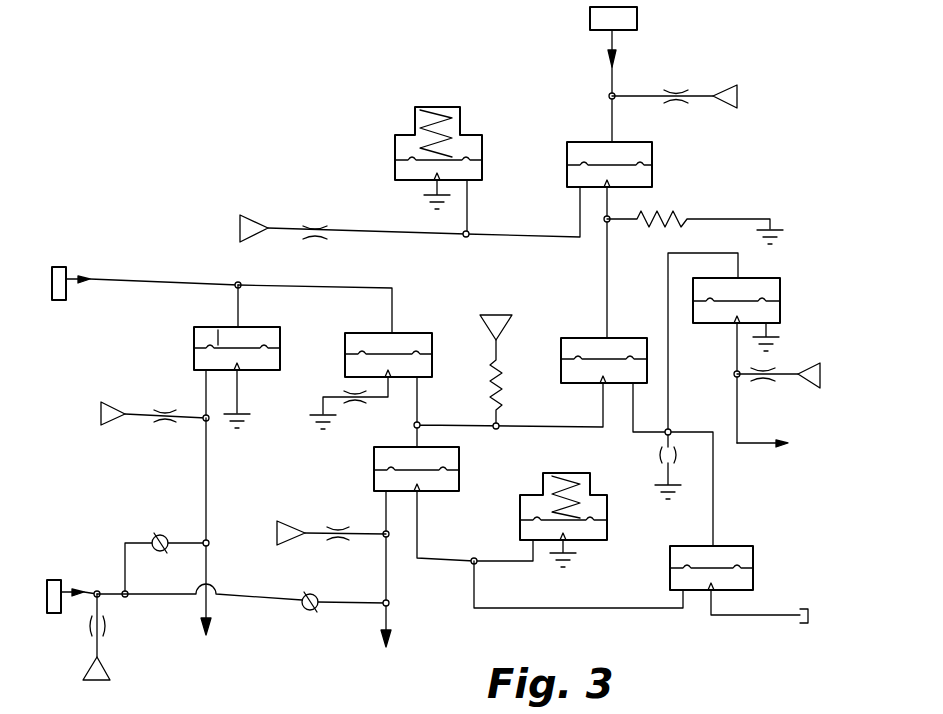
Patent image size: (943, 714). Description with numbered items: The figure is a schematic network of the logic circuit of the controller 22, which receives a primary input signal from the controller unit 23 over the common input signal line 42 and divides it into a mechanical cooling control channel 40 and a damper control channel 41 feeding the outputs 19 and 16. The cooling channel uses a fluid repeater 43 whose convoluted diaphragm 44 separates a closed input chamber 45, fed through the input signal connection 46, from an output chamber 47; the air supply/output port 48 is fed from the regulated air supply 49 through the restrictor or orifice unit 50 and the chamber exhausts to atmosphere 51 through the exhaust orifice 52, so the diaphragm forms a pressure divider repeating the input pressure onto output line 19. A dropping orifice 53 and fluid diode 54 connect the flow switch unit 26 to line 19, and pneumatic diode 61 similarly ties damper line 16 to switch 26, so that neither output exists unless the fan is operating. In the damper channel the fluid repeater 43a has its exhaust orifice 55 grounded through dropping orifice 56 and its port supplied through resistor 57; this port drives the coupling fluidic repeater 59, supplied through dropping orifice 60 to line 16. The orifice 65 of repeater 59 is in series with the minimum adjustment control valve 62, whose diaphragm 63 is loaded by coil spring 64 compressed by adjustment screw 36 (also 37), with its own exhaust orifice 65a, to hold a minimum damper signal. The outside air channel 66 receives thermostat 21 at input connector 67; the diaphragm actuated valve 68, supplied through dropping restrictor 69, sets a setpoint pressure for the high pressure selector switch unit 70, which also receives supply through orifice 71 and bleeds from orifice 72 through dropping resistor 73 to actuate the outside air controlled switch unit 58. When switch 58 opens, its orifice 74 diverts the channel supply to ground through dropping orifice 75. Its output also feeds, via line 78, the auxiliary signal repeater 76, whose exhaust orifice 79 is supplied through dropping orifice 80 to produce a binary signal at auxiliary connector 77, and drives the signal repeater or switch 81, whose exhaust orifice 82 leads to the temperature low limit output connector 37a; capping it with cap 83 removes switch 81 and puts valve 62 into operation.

The thermostat 21 is at (637, 18).
The input signal connector 67 is at (616, 58).
The pressure dropping orifice 71 is at (676, 90).
The high pressure selector switch unit 70 is at (657, 166).
The orifice 72 is at (611, 190).
The dropping resistor 73 is at (665, 216).
The controller 22 is at (248, 190).
The dropping restrictor 69 is at (313, 222).
The diaphragm actuated valve 68 is at (484, 147).
The adjustment screw 37 is at (440, 130).
The controller unit 23 is at (58, 302).
The common input signal line 42 is at (158, 285).
The mechanical cooling control channel 40 is at (237, 282).
The damper control channel 41 is at (401, 276).
The convoluted diaphragm 44 is at (218, 345).
The input signal connection 46 is at (239, 318).
The fluid repeater 43 is at (282, 337).
The input chamber 45 is at (244, 339).
The output chamber 47 is at (219, 360).
The air supply/output port 48 is at (205, 376).
The exhaust orifice 52 is at (238, 373).
The restrictor or orifice unit 50 is at (171, 400).
The regulated air supply 49 is at (118, 422).
The atmosphere 51 is at (246, 422).
The fluid repeater 43a is at (445, 320).
The exhaust orifice 55 is at (384, 376).
The dropping orifice 56 is at (352, 398).
The resistor 57 is at (490, 385).
The outside air controlled switch unit 58 is at (562, 378).
The pneumatic branch or channel 66 is at (574, 279).
The orifice 74 is at (606, 385).
The auxiliary signal repeater 76 is at (782, 293).
The exhaust orifice 79 is at (731, 322).
The line 78 is at (670, 394).
The dropping orifice 80 is at (763, 382).
The dropping orifice 75 is at (673, 456).
The auxiliary connector 77 is at (779, 450).
The pneumatic or fluid diode 54 is at (186, 519).
The coupling fluidic repeater 59 is at (372, 480).
The orifice 65 is at (418, 494).
The dropping orifice 60 is at (336, 535).
The adjustment screw 36 is at (561, 494).
The coil spring 64 is at (576, 490).
The diaphragm 63 is at (589, 516).
The minimum adjustment control valve 62 is at (520, 512).
The exhaust orifice 65a is at (572, 548).
The flow switch unit 26 is at (55, 614).
The dropping orifice 53 is at (106, 626).
The output line 19 is at (210, 608).
The pneumatic diode 61 is at (318, 610).
The damper control line 16 is at (390, 608).
The signal repeater or switch 81 is at (752, 545).
The exhaust orifice 82 is at (716, 592).
The temperature low limit output connector 37a is at (807, 612).
The cap 83 is at (810, 610).